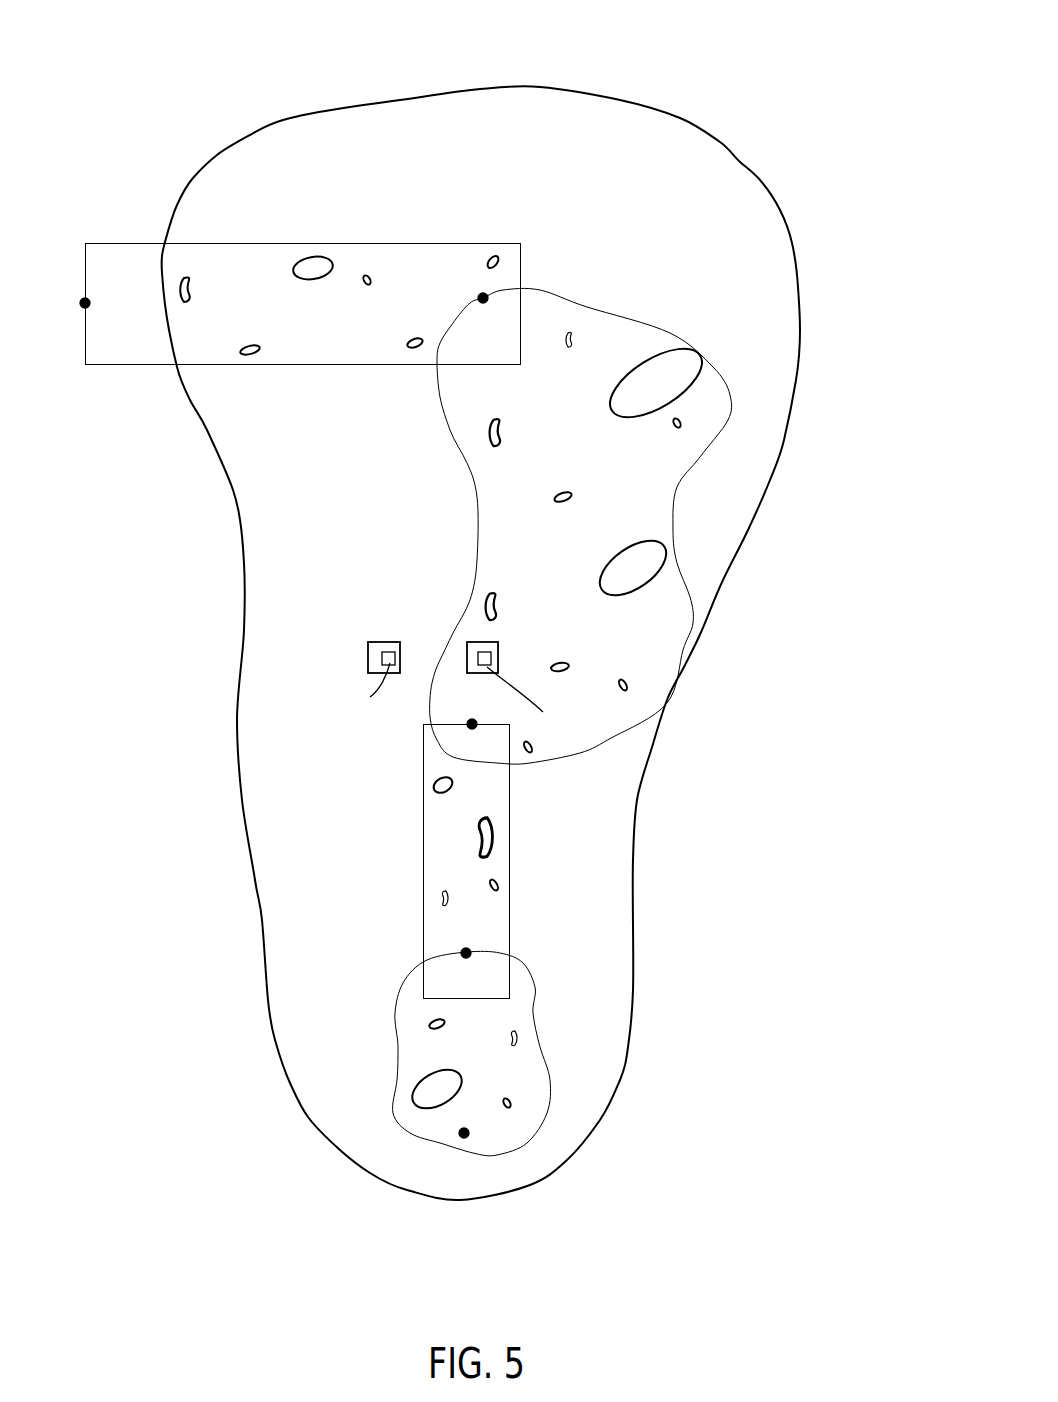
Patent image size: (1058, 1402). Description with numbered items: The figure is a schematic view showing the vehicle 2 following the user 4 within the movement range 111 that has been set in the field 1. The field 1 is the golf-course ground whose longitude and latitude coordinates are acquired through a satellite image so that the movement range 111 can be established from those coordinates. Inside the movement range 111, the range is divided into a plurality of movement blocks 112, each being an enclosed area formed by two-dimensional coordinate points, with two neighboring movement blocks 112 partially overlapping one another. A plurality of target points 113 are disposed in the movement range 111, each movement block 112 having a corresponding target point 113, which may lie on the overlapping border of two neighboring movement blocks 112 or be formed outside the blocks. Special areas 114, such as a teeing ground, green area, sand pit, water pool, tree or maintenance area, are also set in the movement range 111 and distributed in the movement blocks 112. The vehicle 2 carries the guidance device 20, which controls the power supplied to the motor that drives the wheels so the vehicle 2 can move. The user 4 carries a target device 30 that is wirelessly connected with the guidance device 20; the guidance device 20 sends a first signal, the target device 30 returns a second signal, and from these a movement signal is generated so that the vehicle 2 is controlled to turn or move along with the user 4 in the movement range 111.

The field 1 is at (710, 160).
The movement range 111 is at (755, 407).
The movement block 112 is at (150, 260).
The target point 113 is at (85, 303).
The special area 114 is at (308, 257).
The vehicle 2 is at (498, 657).
The guidance device 20 is at (487, 667).
The user 4 is at (368, 657).
The target device 30 is at (390, 663).